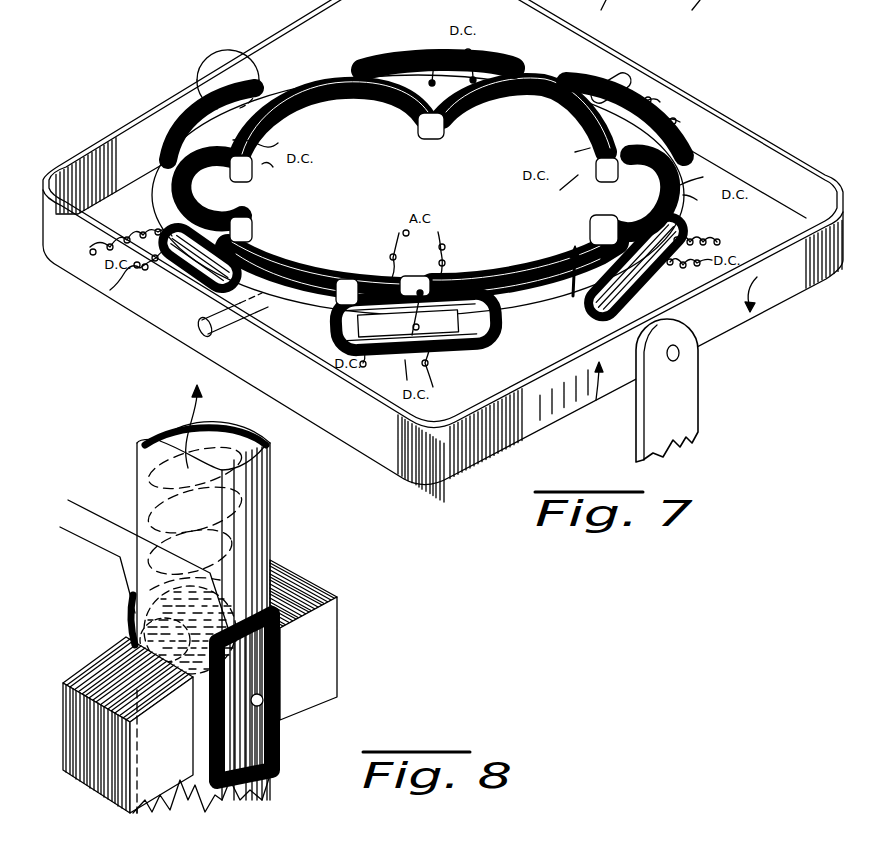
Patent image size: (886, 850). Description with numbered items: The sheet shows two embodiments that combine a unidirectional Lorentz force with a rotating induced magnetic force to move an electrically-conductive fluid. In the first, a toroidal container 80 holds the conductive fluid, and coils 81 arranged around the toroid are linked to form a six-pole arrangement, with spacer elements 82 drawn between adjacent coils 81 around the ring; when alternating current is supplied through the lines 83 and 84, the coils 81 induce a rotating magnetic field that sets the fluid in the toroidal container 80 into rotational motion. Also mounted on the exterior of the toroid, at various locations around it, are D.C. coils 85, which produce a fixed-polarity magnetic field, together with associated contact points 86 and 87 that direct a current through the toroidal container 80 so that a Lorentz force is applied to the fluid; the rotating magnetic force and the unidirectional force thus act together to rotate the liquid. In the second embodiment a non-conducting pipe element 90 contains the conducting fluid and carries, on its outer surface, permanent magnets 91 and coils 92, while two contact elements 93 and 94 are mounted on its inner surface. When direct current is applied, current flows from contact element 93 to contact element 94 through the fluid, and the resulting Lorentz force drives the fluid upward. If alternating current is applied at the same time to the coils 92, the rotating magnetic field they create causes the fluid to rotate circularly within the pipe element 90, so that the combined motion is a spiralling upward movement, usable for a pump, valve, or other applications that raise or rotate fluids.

In FIG. 7, the toroidal container 80 is at (670, 160).
In FIG. 7, the coils 81 is at (292, 88).
In FIG. 7, the spacer spools 82 is at (424, 136).
In FIG. 7, the line 83 is at (390, 256).
In FIG. 7, the line 84 is at (445, 250).
In FIG. 7, the D.C. coils 85 is at (190, 122).
In FIG. 7, the contact point 86 is at (67, 240).
In FIG. 7, the contact point 87 is at (86, 300).
In FIG. 8, the non-conducting pipe element 90 is at (282, 523).
In FIG. 8, the permanent magnets 91 is at (73, 743).
In FIG. 8, the coils 92 is at (133, 612).
In FIG. 8, the contact element 93 is at (153, 640).
In FIG. 8, the contact element 94 is at (240, 703).